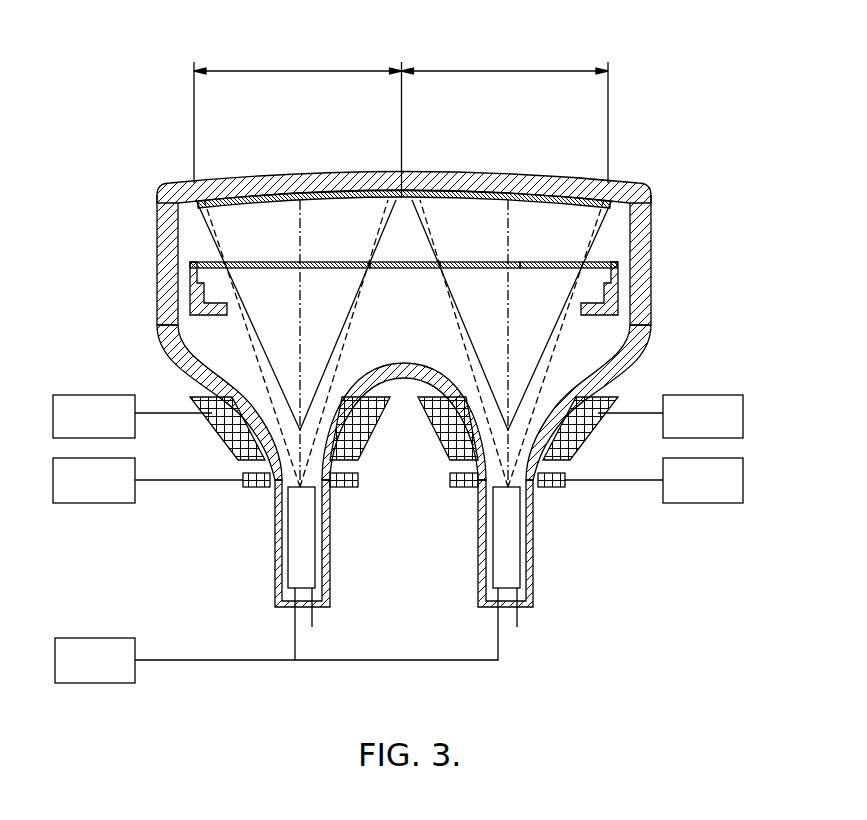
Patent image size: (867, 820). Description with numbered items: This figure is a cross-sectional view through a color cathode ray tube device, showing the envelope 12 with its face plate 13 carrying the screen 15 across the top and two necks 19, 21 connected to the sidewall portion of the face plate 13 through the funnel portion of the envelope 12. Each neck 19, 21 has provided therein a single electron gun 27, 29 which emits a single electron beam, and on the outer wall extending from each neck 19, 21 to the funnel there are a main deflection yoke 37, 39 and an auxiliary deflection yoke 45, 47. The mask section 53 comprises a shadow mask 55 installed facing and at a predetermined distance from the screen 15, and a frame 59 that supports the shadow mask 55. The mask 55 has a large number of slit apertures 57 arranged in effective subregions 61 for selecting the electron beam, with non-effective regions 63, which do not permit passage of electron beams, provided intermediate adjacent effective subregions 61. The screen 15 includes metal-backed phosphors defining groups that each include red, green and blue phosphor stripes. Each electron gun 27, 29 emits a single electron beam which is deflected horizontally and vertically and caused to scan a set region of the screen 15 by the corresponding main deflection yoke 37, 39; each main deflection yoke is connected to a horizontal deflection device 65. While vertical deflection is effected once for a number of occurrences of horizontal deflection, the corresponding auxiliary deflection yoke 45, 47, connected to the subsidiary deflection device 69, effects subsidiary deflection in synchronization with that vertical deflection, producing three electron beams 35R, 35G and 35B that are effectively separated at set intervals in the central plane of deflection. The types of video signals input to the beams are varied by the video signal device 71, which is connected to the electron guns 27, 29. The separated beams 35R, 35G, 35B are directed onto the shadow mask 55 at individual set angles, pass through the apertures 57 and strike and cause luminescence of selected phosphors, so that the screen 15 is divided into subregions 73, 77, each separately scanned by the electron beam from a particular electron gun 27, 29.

The envelope 12 is at (148, 209).
The face plate 13 is at (302, 183).
The screen 15 is at (350, 196).
The neck 19 is at (277, 557).
The neck 21 is at (482, 555).
The electron gun 27 is at (308, 572).
The electron gun 29 is at (510, 573).
The red electron beam 35R is at (455, 317).
The green electron beam 35G is at (457, 327).
The blue electron beam 35B is at (477, 353).
The main deflection yoke 37 is at (362, 428).
The main deflection yoke 39 is at (575, 428).
The auxiliary deflection yoke 45 is at (350, 484).
The auxiliary deflection yoke 47 is at (566, 484).
The mask section 53 is at (467, 271).
The shadow mask 55 is at (444, 247).
The apertures 57 is at (335, 262).
The frame 59 is at (444, 290).
The effective subregions 61 is at (478, 262).
The non-effective regions 63 is at (402, 262).
The horizontal deflection device 65 is at (119, 360).
The subsidiary deflection device 69 is at (103, 503).
The video signal device 71 is at (120, 638).
The subregion 73 is at (298, 122).
The subregion 77 is at (505, 114).